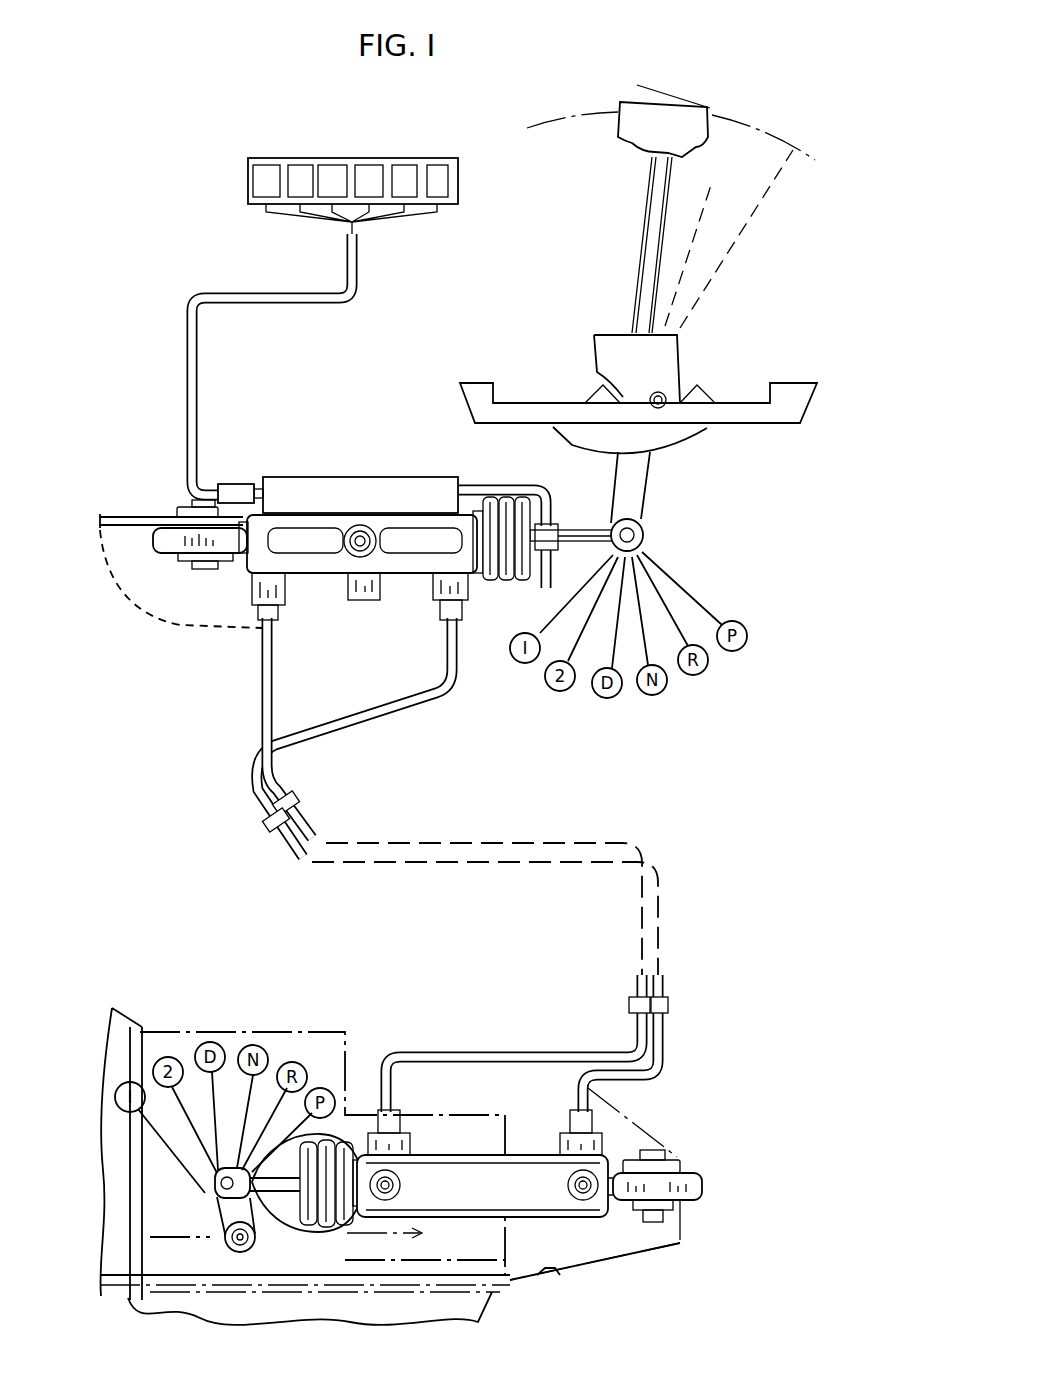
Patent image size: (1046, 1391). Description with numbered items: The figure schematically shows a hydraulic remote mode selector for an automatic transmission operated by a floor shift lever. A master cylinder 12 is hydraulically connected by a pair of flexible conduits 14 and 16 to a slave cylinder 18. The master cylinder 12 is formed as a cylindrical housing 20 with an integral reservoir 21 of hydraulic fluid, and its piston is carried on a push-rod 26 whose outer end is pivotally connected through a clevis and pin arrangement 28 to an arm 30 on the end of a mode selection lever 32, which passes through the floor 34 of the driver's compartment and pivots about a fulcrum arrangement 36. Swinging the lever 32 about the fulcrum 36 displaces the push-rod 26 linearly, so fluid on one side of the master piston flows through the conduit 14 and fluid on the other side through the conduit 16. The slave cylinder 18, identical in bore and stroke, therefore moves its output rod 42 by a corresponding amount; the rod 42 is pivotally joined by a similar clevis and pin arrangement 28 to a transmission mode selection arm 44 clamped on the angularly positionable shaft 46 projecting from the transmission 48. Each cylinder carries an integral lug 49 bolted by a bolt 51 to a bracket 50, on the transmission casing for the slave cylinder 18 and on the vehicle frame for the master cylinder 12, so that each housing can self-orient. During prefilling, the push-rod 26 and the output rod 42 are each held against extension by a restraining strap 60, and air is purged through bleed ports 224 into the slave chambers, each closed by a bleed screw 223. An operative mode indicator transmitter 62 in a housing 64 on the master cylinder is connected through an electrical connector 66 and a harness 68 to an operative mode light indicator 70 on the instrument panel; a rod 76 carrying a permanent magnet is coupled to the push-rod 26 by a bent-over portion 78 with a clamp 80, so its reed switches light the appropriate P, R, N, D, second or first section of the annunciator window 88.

The master cylinder 12 is at (424, 589).
The flexible conduit 14 is at (286, 775).
The flexible conduit 16 is at (408, 703).
The slave cylinder 18 is at (495, 1185).
The cylindrical housing 20 is at (352, 596).
The integral reservoir 21 is at (290, 582).
The push-rod 26 is at (580, 547).
The clevis and pin arrangement 28 is at (646, 528).
The arm 30 is at (655, 490).
The shift lever 32 is at (640, 276).
The floor 34 is at (533, 407).
The fulcrum arrangement 36 is at (668, 350).
The output rod 42 is at (270, 1188).
The transmission mode selection arm 44 is at (228, 1230).
The angularly positionable shaft 46 is at (256, 1237).
The transmission 48 is at (302, 1020).
The integral lug 49 is at (180, 548).
The bracket 50 is at (163, 517).
The bolt 51 is at (200, 570).
The restraining strap 60 is at (578, 549).
The operative mode indicator transmitter 62 is at (338, 474).
The housing 64 is at (382, 477).
The electrical connector 66 is at (236, 486).
The harness 68 is at (198, 408).
The operative mode light indicator 70 is at (353, 175).
The rod 76 is at (503, 491).
The bent-over portion 78 is at (548, 504).
The clamp 80 is at (546, 575).
The annunciator window 88 is at (403, 164).
The bleed screw 223 is at (400, 1185).
The bleed port 224 is at (395, 1200).